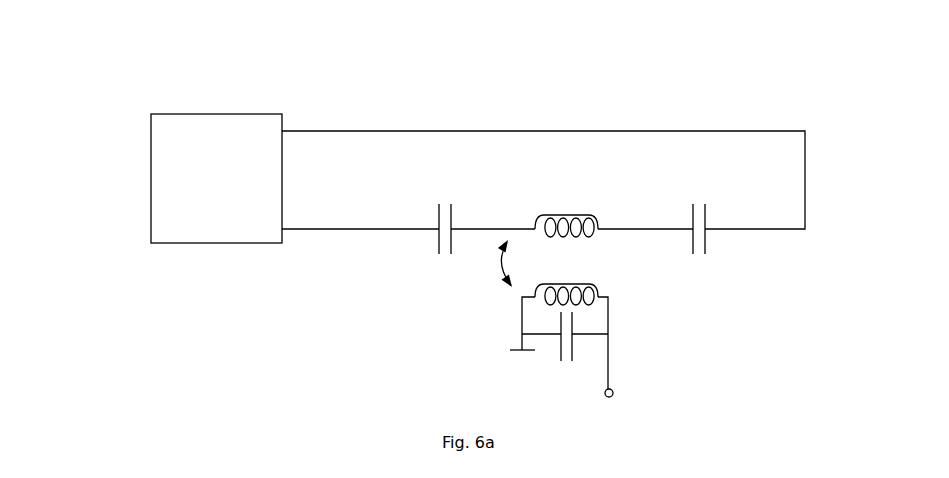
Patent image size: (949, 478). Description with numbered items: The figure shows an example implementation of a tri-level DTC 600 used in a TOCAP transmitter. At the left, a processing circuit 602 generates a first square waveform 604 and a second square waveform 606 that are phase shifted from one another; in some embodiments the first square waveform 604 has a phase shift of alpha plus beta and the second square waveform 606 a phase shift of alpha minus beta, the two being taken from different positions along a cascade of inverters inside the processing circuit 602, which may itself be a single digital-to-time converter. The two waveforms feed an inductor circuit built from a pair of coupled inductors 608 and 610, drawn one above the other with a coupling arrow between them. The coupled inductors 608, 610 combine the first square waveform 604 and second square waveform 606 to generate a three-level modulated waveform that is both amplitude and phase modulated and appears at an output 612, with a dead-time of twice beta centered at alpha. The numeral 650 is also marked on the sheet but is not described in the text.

The tri-level DTC 600 is at (833, 63).
The processing circuit 602 is at (216, 178).
The first square waveform 604 is at (359, 296).
The second square waveform 606 is at (350, 63).
The coupled inductor 608 is at (576, 205).
The coupled inductor 610 is at (586, 274).
The output 612 is at (646, 376).
The circuit diagram 650 is at (850, 441).